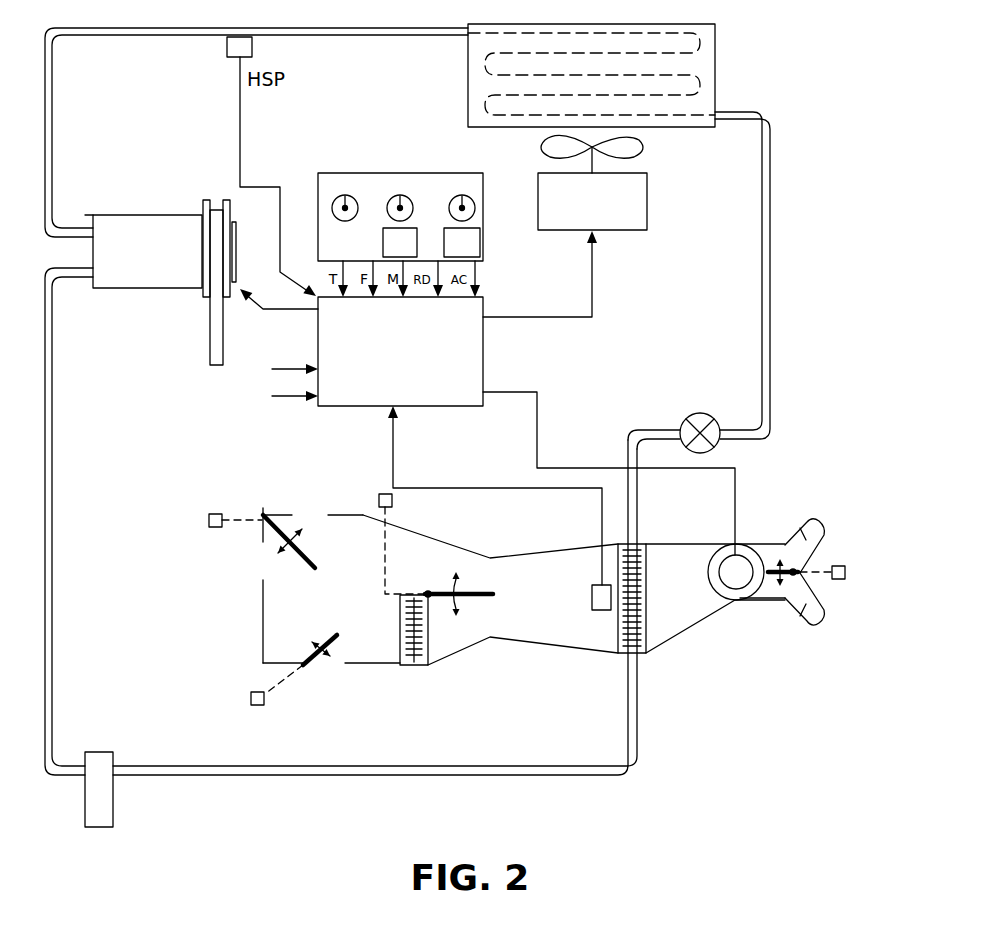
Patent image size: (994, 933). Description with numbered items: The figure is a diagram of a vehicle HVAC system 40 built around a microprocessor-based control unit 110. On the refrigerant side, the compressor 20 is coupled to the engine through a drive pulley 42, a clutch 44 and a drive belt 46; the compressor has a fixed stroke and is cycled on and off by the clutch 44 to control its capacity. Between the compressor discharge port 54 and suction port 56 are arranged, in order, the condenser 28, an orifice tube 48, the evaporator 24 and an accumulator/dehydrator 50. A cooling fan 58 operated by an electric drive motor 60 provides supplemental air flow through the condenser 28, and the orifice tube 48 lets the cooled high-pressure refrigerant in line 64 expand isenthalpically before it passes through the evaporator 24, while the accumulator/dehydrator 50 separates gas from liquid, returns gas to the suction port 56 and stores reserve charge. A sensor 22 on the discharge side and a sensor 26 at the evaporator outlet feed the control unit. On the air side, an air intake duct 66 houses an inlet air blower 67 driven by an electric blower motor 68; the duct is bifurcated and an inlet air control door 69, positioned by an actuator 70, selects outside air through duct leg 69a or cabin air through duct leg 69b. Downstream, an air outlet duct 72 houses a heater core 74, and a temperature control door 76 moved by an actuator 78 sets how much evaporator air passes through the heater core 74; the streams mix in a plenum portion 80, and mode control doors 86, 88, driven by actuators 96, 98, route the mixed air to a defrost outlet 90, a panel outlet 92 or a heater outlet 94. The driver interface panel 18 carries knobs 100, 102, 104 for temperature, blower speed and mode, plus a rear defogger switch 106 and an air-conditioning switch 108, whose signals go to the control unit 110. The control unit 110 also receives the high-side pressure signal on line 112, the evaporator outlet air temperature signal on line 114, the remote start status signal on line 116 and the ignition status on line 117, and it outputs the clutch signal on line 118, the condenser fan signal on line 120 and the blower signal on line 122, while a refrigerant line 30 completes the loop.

The driver interface panel 18 is at (404, 211).
The compressor 20 is at (180, 288).
The high side pressure sensor 22 is at (227, 42).
The evaporator 24 is at (650, 612).
The evaporator outlet air temperature sensor 26 is at (602, 610).
The condenser 28 is at (715, 48).
The discharge refrigerant line 30 is at (52, 90).
The HVAC system 40 is at (795, 93).
The drive pulley 42 is at (203, 206).
The clutch 44 is at (236, 246).
The drive belt 46 is at (210, 360).
The orifice tube 48 is at (700, 413).
The accumulator/dehydrator 50 is at (113, 800).
The compressor discharge port 54 is at (93, 215).
The compressor suction port 56 is at (85, 282).
The cooling fan 58 is at (643, 148).
The electric drive motor 60 is at (647, 198).
The line 64 is at (771, 192).
The air intake duct 66 is at (702, 625).
The inlet air blower 67 is at (758, 600).
The electric blower motor 68 is at (718, 553).
The inlet air control door 69 is at (773, 562).
The duct leg 69a is at (803, 532).
The duct leg 69b is at (803, 617).
The actuator 70 is at (840, 566).
The air outlet duct 72 is at (546, 645).
The heater core 74 is at (400, 635).
The temperature control door 76 is at (452, 590).
The actuator 78 is at (379, 500).
The plenum portion 80 is at (263, 650).
The mode control door 86 is at (315, 560).
The mode control door 88 is at (335, 636).
The defrost outlet 90 is at (328, 515).
The panel outlet 92 is at (263, 582).
The heater outlet 94 is at (345, 663).
The actuator 96 is at (209, 520).
The actuator 98 is at (251, 698).
The control knob 100 is at (340, 196).
The control knob 102 is at (380, 200).
The control knob 104 is at (447, 200).
The switch 106 is at (383, 250).
The switch 108 is at (481, 240).
The control unit 110 is at (483, 343).
The line 112 is at (240, 130).
The line 114 is at (395, 430).
The line 116 is at (285, 368).
The line 117 is at (290, 398).
The line 118 is at (251, 311).
The line 120 is at (594, 290).
The line 122 is at (538, 402).